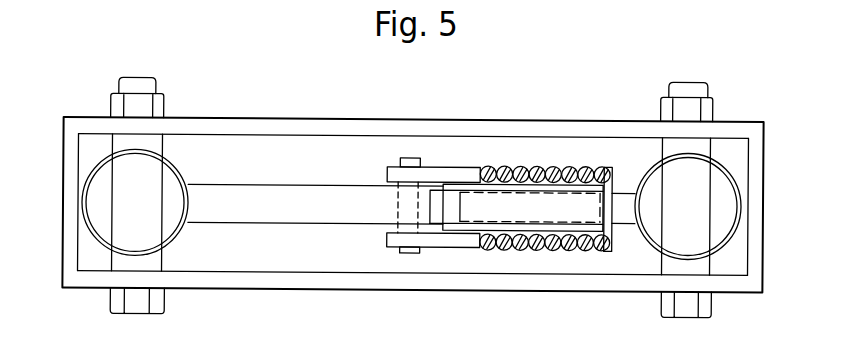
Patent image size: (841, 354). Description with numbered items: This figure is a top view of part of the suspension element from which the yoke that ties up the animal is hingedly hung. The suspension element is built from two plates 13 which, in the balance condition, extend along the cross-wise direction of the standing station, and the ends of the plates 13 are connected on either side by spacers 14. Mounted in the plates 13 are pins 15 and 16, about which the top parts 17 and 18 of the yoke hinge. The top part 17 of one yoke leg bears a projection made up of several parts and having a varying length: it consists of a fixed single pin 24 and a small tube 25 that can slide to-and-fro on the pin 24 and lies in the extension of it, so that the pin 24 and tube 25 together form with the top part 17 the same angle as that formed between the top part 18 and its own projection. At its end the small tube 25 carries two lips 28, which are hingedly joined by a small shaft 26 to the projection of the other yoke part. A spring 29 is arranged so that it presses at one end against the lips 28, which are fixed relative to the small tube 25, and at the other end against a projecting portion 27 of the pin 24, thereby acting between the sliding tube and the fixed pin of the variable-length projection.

The plates 13 is at (250, 126).
The spacers 14 is at (72, 270).
The pin 15 is at (697, 143).
The pin 16 is at (152, 265).
The top part of the yoke 17 is at (720, 251).
The top part of the yoke 18 is at (103, 157).
The fixed single pin 24 is at (620, 203).
The small tube 25 is at (508, 185).
The small shaft 26 is at (412, 255).
The projecting portion 27 is at (614, 232).
The lips 28 is at (445, 176).
The spring 29 is at (562, 183).